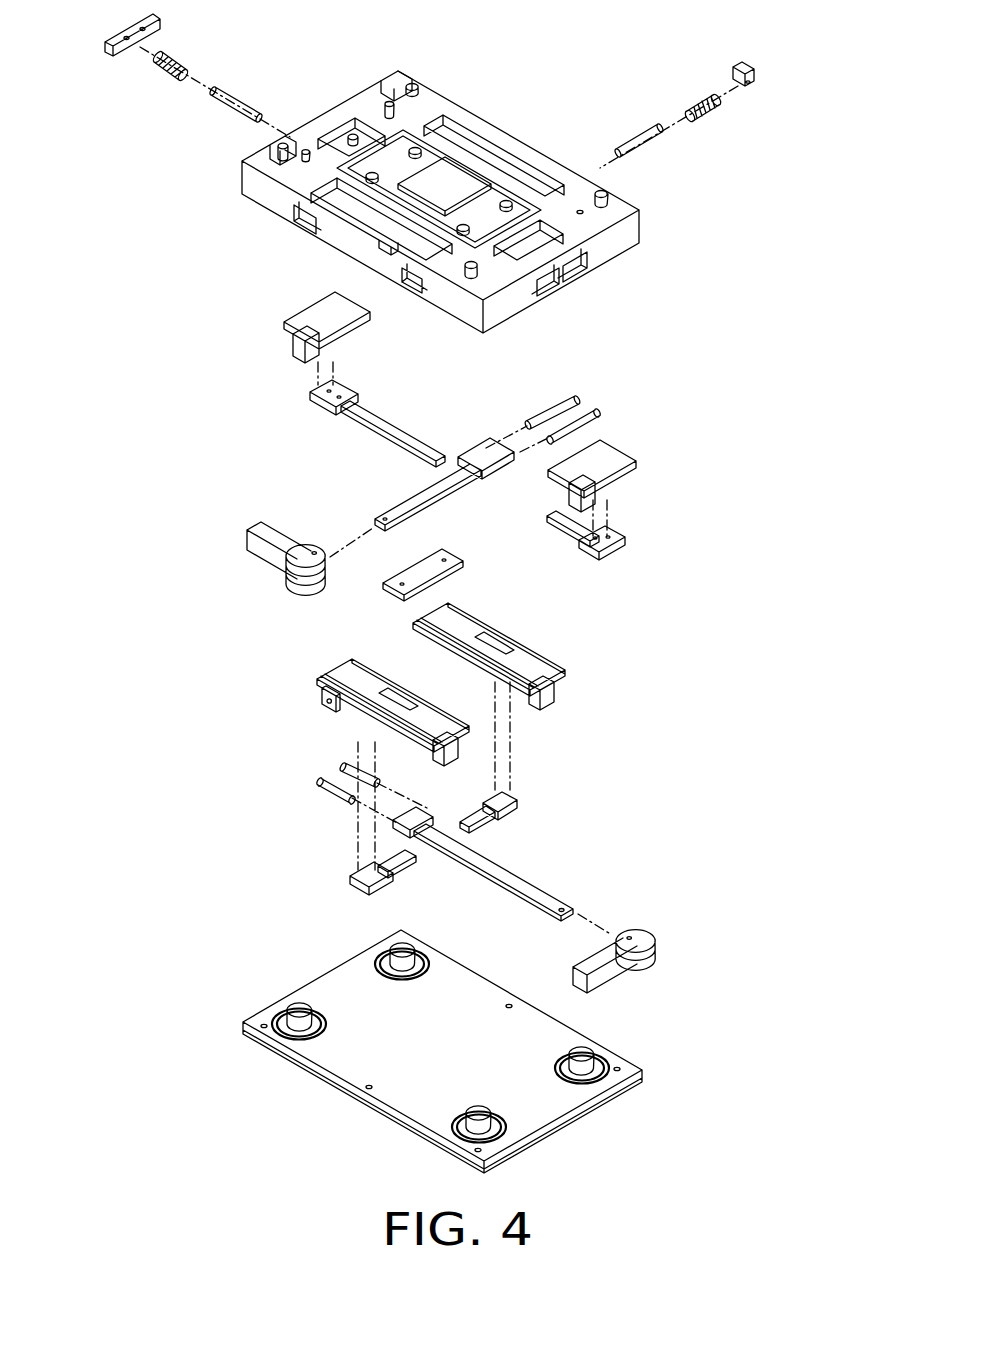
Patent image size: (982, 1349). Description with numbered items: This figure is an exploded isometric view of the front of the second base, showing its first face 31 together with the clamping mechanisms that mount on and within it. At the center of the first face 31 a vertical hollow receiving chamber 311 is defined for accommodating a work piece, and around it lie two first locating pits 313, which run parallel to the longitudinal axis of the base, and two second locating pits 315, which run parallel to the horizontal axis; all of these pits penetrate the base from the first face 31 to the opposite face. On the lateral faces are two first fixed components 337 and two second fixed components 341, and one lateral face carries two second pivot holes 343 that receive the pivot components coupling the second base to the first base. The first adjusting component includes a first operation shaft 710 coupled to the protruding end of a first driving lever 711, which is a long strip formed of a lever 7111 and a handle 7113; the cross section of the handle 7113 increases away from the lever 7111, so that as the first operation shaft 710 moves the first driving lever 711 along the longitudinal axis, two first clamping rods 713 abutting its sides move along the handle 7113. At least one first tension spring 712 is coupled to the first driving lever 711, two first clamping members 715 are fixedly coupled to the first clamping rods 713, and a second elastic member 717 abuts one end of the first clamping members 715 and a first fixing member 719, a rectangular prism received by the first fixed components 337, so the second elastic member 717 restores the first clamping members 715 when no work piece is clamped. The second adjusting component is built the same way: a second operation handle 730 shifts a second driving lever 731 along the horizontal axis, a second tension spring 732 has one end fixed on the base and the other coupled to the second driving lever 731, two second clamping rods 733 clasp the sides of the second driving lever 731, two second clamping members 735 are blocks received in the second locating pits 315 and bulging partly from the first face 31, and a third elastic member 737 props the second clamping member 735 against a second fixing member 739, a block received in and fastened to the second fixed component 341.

The first face 31 is at (625, 212).
The receiving chamber 311 is at (437, 167).
The first locating pits 313 is at (367, 213).
The second locating pits 315 is at (532, 253).
The first fixed components 337 is at (297, 222).
The second fixed components 341 is at (586, 265).
The second pivot holes 343 is at (384, 88).
The second fixing member 739 is at (108, 34).
The third elastic member 737 is at (165, 73).
The first fixing member 719 is at (745, 68).
The second elastic member 717 is at (712, 110).
The second clamping rods 733 is at (313, 393).
The second driving lever 731 is at (398, 512).
The second tension spring 732 is at (590, 413).
The second clamping members 735 is at (613, 463).
The second operation handle 730 is at (290, 567).
The first clamping members 715 is at (538, 663).
The first tension spring 712 is at (330, 793).
The first clamping rods 713 is at (358, 880).
The first driving lever 711 is at (536, 857).
The lever 7111 is at (540, 883).
The handle 7113 is at (467, 843).
The first operation shaft 710 is at (640, 938).